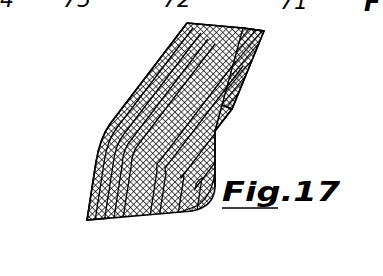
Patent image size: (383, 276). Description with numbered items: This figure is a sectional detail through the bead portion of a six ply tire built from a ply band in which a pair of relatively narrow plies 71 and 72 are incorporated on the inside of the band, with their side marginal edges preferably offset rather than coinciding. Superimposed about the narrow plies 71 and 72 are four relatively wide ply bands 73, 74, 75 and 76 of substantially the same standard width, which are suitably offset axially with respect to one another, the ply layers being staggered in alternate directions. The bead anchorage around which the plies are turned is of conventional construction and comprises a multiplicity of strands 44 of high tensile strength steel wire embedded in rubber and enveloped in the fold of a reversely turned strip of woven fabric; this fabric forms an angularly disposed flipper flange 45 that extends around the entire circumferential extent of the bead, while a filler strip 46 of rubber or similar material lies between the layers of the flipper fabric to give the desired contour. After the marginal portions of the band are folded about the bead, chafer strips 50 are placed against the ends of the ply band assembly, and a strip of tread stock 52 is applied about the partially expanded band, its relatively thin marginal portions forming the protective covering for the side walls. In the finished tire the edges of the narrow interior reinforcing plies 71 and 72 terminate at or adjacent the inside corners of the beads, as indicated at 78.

The strands 44 is at (95, 172).
The flipper flange 45 is at (168, 57).
The filler strip 46 is at (100, 140).
The chafer strips 50 is at (215, 162).
The tread stock 52 is at (265, 28).
The narrow ply 71 is at (138, 88).
The narrow ply 72 is at (112, 127).
The ply band 73 is at (213, 133).
The ply band 74 is at (242, 85).
The ply band 75 is at (260, 53).
The ply band 76 is at (238, 27).
The inside corner of the bead 78 is at (87, 219).